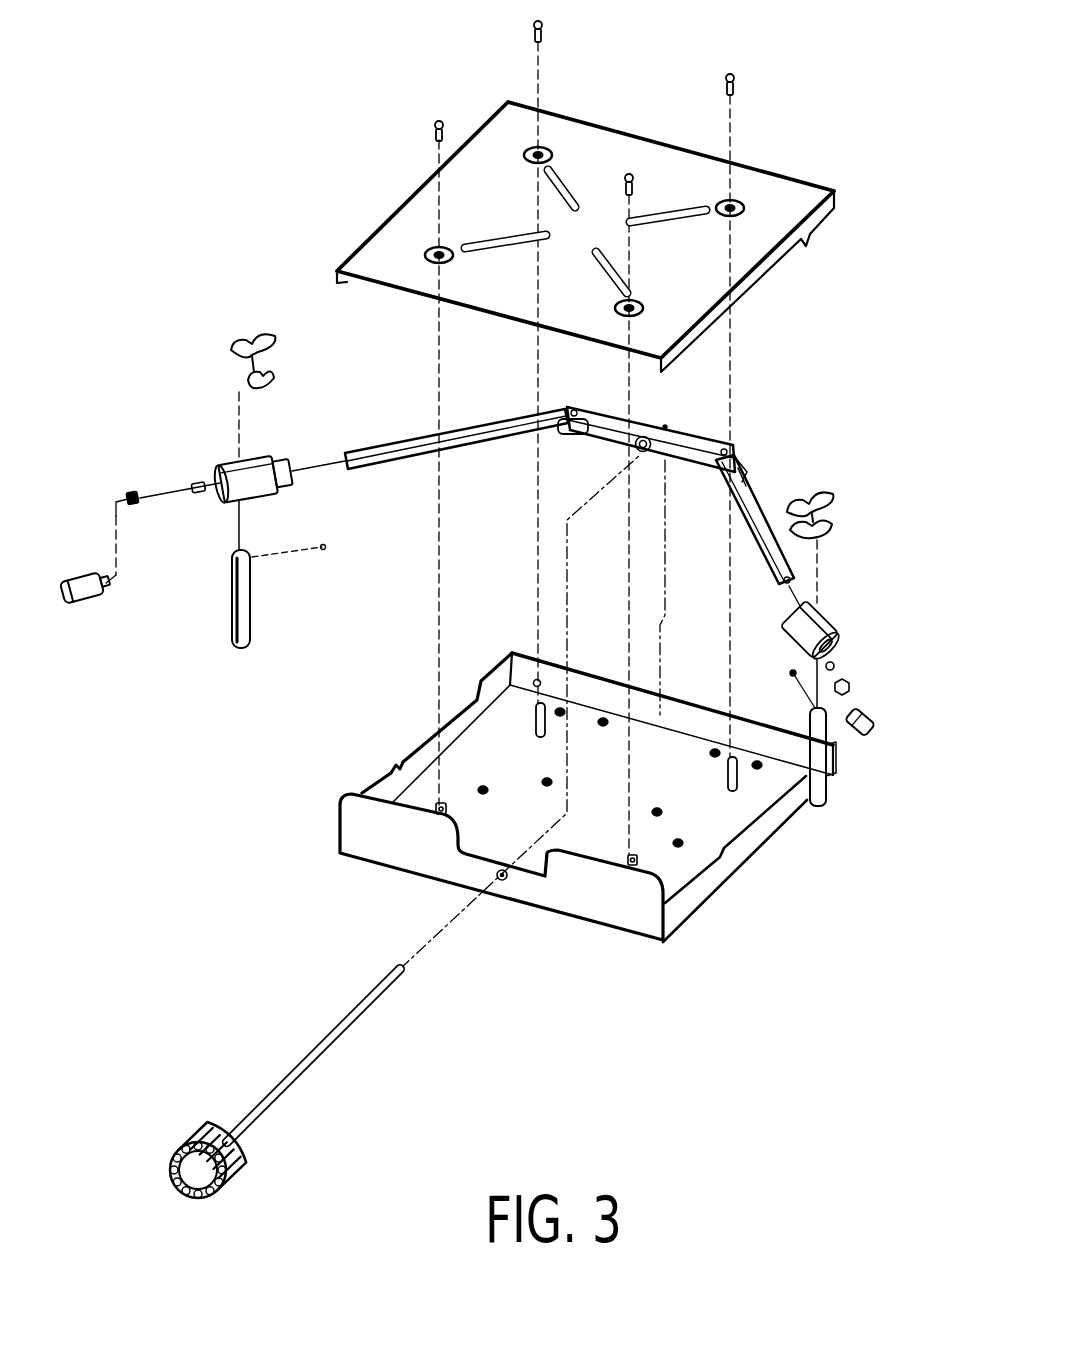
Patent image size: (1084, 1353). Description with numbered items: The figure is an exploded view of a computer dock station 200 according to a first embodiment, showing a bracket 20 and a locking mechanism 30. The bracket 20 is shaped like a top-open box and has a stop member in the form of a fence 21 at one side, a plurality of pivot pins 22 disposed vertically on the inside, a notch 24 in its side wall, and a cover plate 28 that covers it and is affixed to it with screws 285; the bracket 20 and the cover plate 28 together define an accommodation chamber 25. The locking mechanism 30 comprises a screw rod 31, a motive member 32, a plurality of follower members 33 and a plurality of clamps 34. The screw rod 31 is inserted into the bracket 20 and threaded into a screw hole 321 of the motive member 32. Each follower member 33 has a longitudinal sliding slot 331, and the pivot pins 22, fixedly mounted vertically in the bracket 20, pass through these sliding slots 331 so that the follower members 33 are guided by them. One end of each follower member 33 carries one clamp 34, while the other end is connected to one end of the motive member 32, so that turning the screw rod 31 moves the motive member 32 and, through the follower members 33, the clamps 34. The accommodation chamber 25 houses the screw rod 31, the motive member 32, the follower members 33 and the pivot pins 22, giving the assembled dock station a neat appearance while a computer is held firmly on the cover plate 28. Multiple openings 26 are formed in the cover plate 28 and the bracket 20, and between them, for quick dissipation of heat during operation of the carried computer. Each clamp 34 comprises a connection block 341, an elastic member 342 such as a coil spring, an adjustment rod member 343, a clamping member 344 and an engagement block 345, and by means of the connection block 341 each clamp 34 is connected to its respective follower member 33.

The quick release assembly 200 is at (328, 15).
The bracket 20 is at (380, 776).
The fence 21 is at (380, 845).
The pivot pins 22 is at (537, 738).
The notch 24 is at (395, 738).
The accommodation chamber 25 is at (697, 866).
The openings 26 is at (648, 214).
The cover plate 28 is at (399, 210).
The screws 285 is at (548, 36).
The locking mechanism 30 is at (318, 653).
The screw rod 31 is at (317, 1047).
The motive member 32 is at (698, 440).
The screw hole 321 is at (643, 438).
The follower members 33 is at (377, 444).
The longitudinal sliding slot 331 is at (548, 421).
The clamps 34 is at (227, 273).
The connection block 341 is at (226, 461).
The elastic member 342 is at (130, 492).
The adjustment rod member 343 is at (233, 601).
The clamping member 344 is at (243, 338).
The engagement block 345 is at (80, 575).